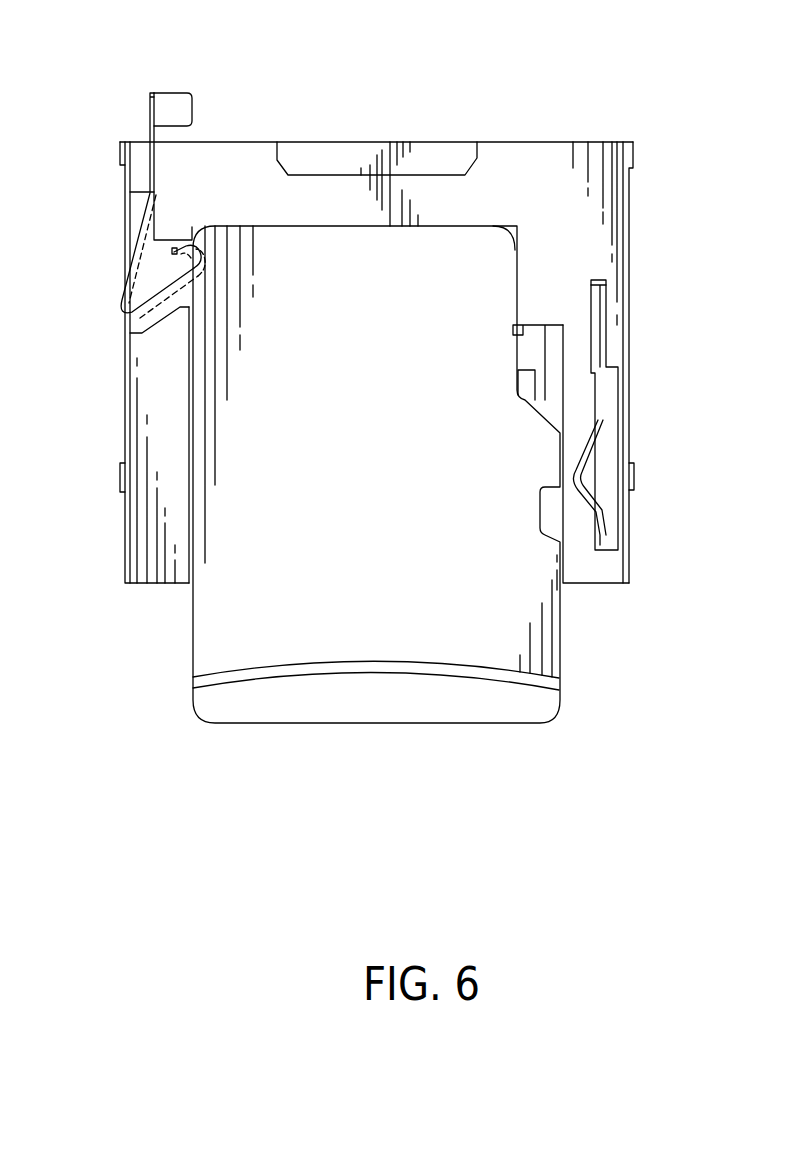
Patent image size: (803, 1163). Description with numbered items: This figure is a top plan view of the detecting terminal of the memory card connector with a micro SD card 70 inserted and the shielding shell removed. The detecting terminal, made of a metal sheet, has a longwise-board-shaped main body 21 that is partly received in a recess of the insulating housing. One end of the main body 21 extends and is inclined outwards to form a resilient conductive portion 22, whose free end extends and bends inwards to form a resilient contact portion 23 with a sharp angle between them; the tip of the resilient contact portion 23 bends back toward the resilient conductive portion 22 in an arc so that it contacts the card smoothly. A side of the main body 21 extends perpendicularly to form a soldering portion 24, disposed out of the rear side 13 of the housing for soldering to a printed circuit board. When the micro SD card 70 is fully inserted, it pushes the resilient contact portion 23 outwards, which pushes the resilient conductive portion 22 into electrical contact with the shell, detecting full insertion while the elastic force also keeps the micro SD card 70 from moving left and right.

The rear side 13 is at (530, 142).
The main body 21 is at (150, 126).
The resilient conductive portion 22 is at (126, 311).
The resilient contact portion 23 is at (190, 268).
The soldering portion 24 is at (172, 108).
The micro SD card 70 is at (517, 643).